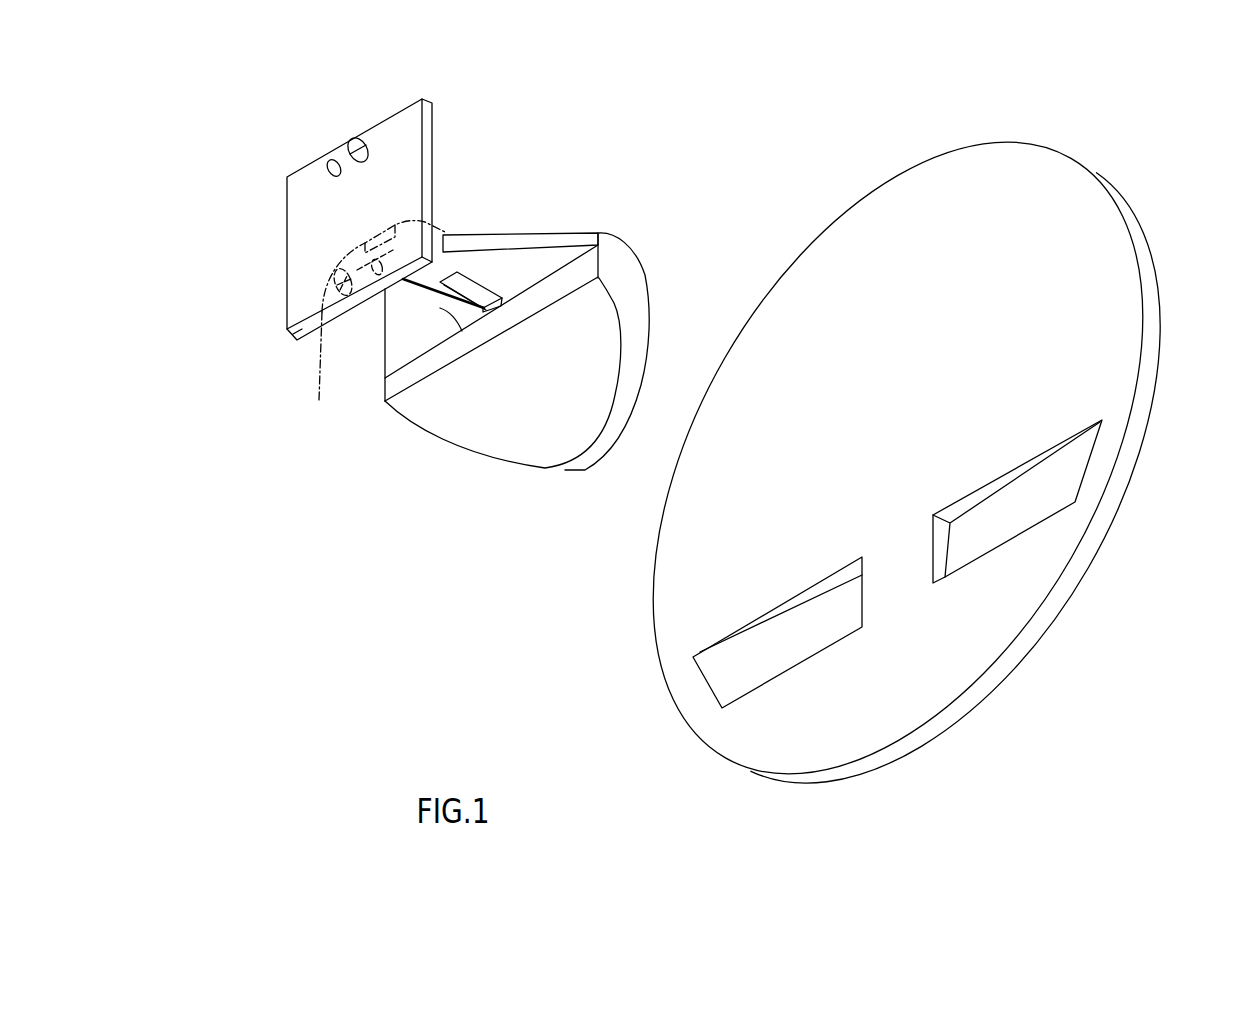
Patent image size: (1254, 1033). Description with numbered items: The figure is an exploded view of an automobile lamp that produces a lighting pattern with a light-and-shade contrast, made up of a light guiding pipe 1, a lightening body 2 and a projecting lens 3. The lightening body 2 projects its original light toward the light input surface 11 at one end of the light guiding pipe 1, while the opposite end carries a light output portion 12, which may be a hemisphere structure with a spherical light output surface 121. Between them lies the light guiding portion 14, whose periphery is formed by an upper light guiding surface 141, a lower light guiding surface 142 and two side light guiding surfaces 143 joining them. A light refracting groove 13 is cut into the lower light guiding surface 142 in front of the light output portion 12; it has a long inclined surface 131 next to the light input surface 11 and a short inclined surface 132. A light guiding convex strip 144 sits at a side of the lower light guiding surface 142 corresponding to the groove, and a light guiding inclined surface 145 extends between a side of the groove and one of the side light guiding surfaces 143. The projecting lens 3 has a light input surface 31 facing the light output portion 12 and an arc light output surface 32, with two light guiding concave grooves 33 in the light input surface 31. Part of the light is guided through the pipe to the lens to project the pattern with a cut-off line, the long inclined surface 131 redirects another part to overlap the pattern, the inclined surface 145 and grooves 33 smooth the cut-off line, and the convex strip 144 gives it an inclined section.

The light guiding pipe 1 is at (470, 331).
The light input surface 11 is at (319, 400).
The light output portion 12 is at (517, 403).
The spherical light output surface 121 is at (635, 357).
The light refracting groove 13 is at (461, 408).
The long inclined surface 131 is at (462, 297).
The short inclined surface 132 is at (513, 299).
The light guiding portion 14 is at (483, 256).
The upper light guiding surface 141 is at (517, 236).
The lower light guiding surface 142 is at (448, 272).
The side light guiding surfaces 143 is at (577, 244).
The light guiding convex strip 144 is at (443, 209).
The light guiding inclined surface 145 is at (537, 270).
The lightening body 2 is at (284, 238).
The projecting lens 3 is at (898, 457).
The light input surface 31 is at (1050, 177).
The arc light output surface 32 is at (1113, 560).
The light guiding concave grooves 33 is at (983, 543).